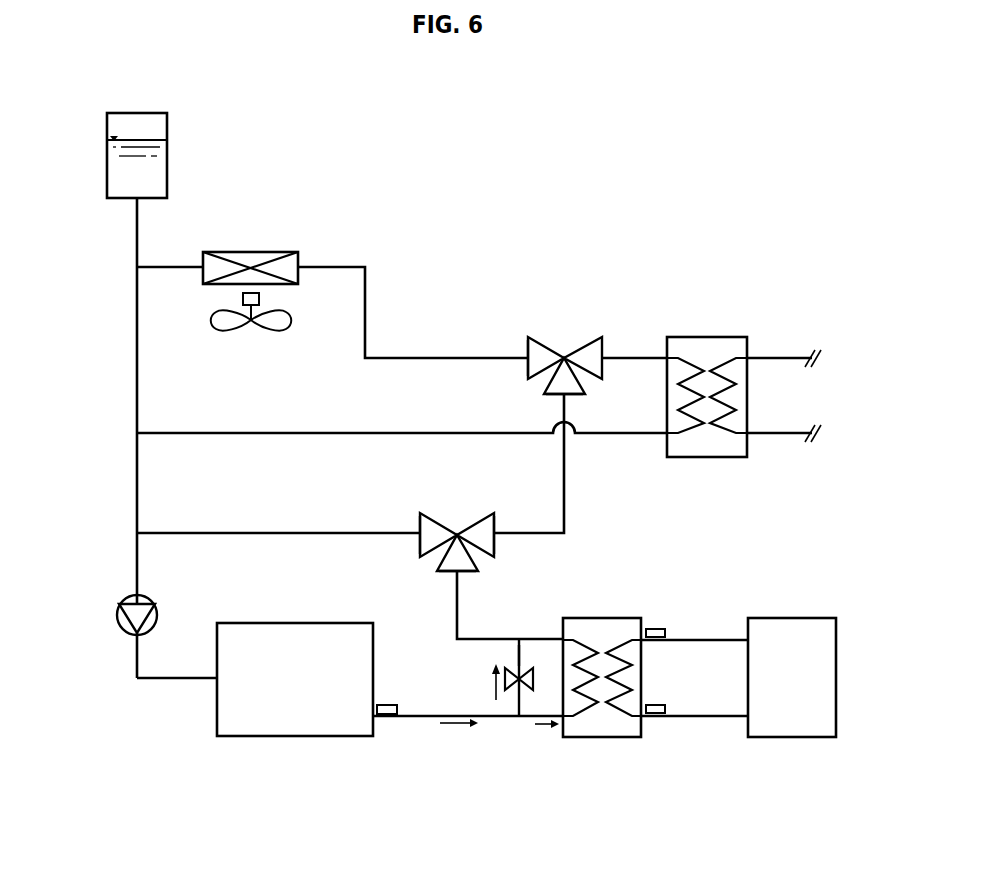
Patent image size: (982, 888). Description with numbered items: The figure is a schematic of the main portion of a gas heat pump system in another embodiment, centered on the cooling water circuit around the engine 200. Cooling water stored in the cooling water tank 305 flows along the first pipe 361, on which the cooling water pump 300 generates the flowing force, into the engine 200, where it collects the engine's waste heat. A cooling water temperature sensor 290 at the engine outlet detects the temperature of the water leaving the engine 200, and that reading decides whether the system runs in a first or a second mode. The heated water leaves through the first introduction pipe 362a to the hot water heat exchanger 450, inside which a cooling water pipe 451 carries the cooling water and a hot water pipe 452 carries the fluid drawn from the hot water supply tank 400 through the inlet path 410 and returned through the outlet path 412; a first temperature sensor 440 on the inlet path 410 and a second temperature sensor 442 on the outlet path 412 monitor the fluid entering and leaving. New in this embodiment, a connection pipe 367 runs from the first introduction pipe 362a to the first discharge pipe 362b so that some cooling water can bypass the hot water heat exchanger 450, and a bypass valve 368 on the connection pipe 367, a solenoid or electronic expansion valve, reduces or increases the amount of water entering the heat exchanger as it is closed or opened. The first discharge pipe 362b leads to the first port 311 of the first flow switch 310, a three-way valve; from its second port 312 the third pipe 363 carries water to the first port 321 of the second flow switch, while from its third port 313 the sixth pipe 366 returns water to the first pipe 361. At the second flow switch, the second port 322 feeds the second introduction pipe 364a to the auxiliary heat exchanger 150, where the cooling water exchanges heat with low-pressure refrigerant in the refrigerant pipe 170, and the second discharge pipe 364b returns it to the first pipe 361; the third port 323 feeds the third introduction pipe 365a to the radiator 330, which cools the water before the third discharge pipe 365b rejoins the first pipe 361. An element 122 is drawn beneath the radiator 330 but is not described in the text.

The cooling water tank 305 is at (137, 112).
The first pipe 361 is at (136, 389).
The third discharge pipe 365b is at (170, 266).
The radiator 330 is at (252, 251).
The cooling fan 122 is at (272, 331).
The third introduction pipe 365a is at (366, 337).
The second port 322 is at (564, 314).
The third port 323 is at (530, 343).
The first port 321 is at (548, 395).
The second introduction pipe 364a is at (626, 356).
The second discharge pipe 364b is at (618, 434).
The auxiliary heat exchanger 150 is at (705, 336).
The refrigerant pipe 170 is at (786, 356).
The sixth pipe 366 is at (253, 531).
The third pipe 363 is at (565, 518).
The first flow switch 310 is at (459, 498).
The third port 313 is at (420, 520).
The second port 312 is at (492, 547).
The first port 311 is at (443, 572).
The first discharge pipe 362b is at (507, 637).
The engine 200 is at (296, 738).
The cooling water temperature sensor 290 is at (387, 716).
The first introduction pipe 362a is at (432, 718).
The cooling water pump 300 is at (117, 615).
The bypass valve 368 is at (523, 690).
The connection pipe 367 is at (516, 653).
The hot water heat exchanger 450 is at (603, 617).
The cooling water pipe for hot water supply 451 is at (583, 718).
The hot water pipe for hot water supply 452 is at (620, 718).
The first temperature sensor 440 is at (656, 628).
The second temperature sensor 442 is at (653, 715).
The inlet path 410 is at (718, 638).
The outlet path 412 is at (708, 718).
The hot water supply tank 400 is at (787, 617).